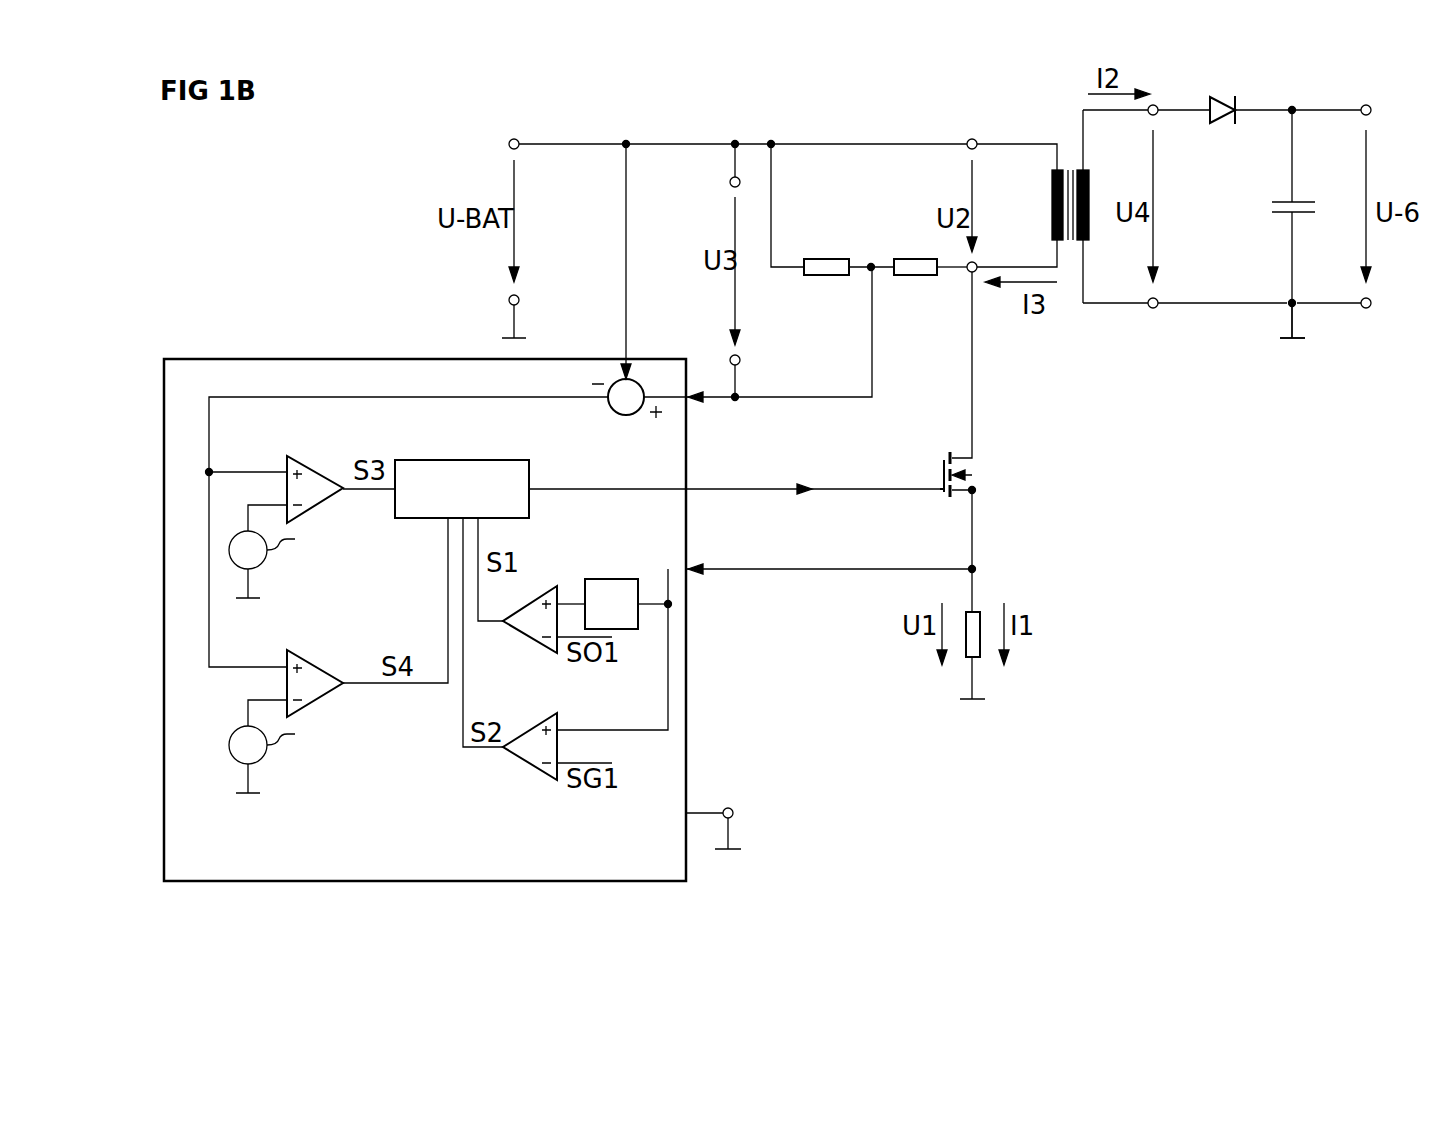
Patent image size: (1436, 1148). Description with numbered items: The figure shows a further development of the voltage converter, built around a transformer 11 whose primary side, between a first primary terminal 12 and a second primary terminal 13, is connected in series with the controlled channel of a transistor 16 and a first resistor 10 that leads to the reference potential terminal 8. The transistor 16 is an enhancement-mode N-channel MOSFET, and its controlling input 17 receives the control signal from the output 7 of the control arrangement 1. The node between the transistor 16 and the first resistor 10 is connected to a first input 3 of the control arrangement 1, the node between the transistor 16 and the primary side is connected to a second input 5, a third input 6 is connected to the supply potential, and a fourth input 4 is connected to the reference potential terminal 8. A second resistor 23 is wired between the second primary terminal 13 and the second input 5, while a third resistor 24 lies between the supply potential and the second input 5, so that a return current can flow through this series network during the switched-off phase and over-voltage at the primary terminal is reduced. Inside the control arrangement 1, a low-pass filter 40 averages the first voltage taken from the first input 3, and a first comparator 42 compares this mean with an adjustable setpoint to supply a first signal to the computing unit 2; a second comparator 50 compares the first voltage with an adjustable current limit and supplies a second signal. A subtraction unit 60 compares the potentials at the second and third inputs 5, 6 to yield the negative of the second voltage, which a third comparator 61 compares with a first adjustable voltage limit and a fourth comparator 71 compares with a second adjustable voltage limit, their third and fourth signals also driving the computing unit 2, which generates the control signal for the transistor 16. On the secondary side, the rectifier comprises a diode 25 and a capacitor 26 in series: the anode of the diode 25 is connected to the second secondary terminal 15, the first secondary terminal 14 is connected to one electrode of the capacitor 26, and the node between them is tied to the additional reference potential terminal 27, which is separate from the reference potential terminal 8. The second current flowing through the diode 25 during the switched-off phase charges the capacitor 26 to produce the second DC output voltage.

The control arrangement 1 is at (425, 882).
The computing unit 2 is at (529, 472).
The first input 3 is at (688, 568).
The fourth input 4 is at (688, 811).
The second input 5 is at (690, 395).
The third input 6 is at (623, 360).
The output 7 is at (688, 488).
The reference potential terminal 8 is at (504, 334).
The first resistor 10 is at (979, 611).
The transformer 11 is at (1062, 148).
The first primary terminal 12 is at (974, 138).
The second primary terminal 13 is at (968, 274).
The first secondary terminal 14 is at (1153, 309).
The second secondary terminal 15 is at (1158, 115).
The transistor 16 is at (991, 415).
The controlling input 17 is at (944, 500).
The second resistor 23 is at (908, 258).
The third resistor 24 is at (818, 258).
The diode 25 is at (1222, 124).
The capacitor 26 is at (1270, 210).
The additional reference potential terminal 27 is at (1297, 341).
The low-pass filter 40 is at (605, 578).
The first comparator 42 is at (535, 643).
The second comparator 50 is at (535, 770).
The subtraction unit 60 is at (628, 415).
The third comparator 61 is at (315, 476).
The fourth comparator 71 is at (315, 671).